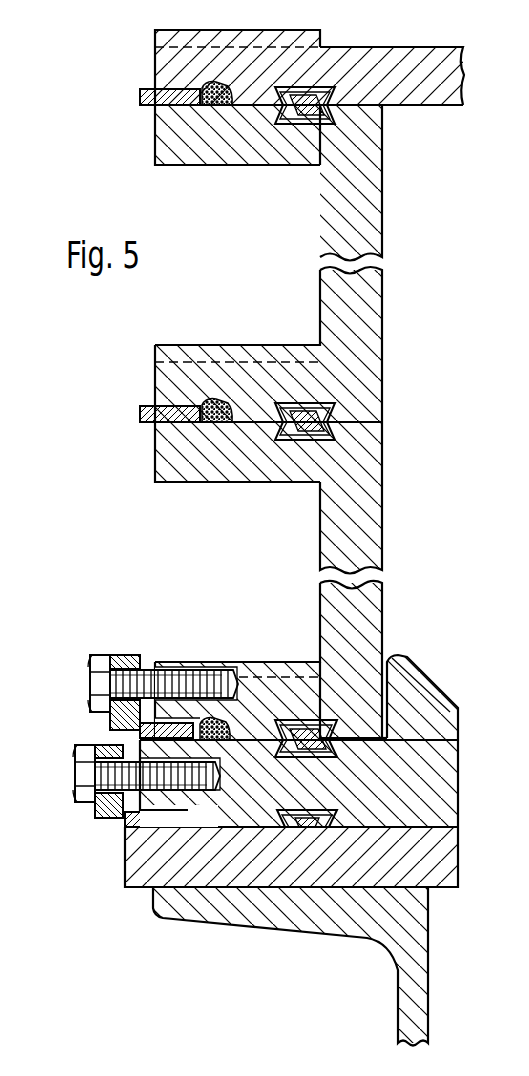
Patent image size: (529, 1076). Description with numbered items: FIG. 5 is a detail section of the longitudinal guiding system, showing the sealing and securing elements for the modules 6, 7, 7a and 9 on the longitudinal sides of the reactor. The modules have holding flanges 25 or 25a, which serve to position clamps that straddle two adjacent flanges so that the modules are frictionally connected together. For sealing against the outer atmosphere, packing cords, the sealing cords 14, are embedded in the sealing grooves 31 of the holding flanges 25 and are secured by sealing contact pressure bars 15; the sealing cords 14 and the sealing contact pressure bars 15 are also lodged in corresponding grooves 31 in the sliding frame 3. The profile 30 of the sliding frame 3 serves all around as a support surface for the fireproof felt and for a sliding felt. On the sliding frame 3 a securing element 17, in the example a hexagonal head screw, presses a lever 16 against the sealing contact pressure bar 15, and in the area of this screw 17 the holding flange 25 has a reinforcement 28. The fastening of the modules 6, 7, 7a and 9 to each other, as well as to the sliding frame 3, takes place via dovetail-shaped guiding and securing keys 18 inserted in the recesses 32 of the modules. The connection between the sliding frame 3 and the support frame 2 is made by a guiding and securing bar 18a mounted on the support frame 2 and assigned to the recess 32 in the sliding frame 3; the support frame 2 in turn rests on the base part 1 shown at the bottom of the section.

The base flange / support 1 is at (415, 956).
The support frame 2 is at (446, 869).
The sliding frame 3 is at (440, 793).
The module 6 is at (322, 420).
The module 7 is at (375, 273).
The module 7a is at (328, 536).
The module 9 is at (406, 58).
The sealing cord 14 is at (222, 106).
The sealing contact pressure bar 15 is at (142, 97).
The lever 16 is at (110, 741).
The securing element 17 is at (76, 775).
The guiding and securing key 18 is at (312, 98).
The guiding and securing bar 18a is at (300, 829).
The holding flange 25 is at (162, 143).
The holding flange 25a is at (160, 68).
The reinforcement 28 is at (157, 36).
The profile 30 is at (404, 661).
The sealing groove 31 is at (222, 82).
The recess 32 is at (337, 117).